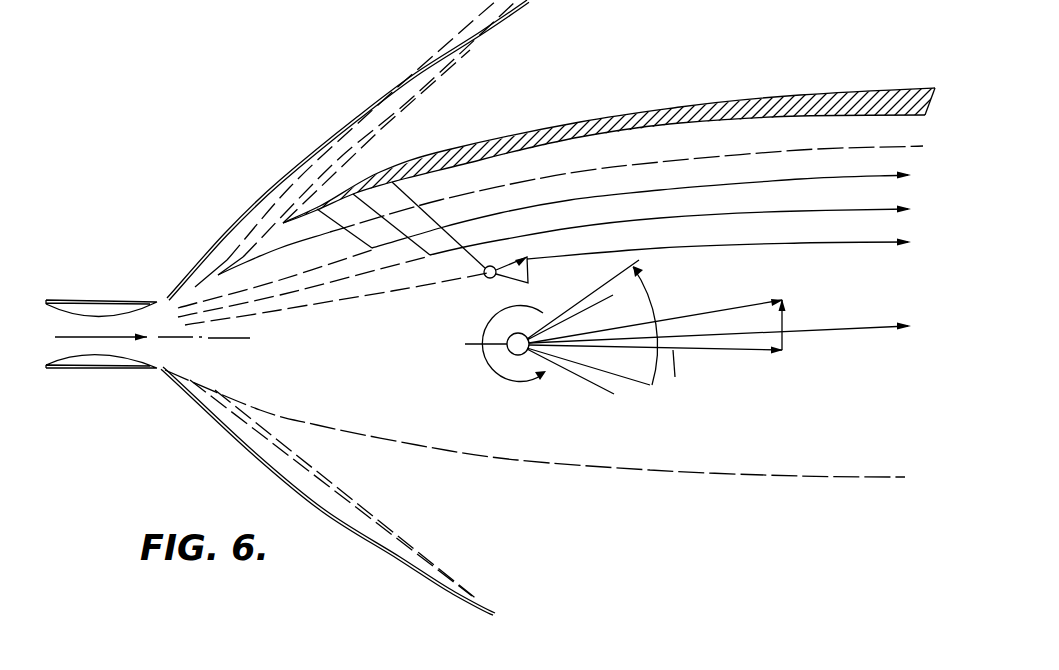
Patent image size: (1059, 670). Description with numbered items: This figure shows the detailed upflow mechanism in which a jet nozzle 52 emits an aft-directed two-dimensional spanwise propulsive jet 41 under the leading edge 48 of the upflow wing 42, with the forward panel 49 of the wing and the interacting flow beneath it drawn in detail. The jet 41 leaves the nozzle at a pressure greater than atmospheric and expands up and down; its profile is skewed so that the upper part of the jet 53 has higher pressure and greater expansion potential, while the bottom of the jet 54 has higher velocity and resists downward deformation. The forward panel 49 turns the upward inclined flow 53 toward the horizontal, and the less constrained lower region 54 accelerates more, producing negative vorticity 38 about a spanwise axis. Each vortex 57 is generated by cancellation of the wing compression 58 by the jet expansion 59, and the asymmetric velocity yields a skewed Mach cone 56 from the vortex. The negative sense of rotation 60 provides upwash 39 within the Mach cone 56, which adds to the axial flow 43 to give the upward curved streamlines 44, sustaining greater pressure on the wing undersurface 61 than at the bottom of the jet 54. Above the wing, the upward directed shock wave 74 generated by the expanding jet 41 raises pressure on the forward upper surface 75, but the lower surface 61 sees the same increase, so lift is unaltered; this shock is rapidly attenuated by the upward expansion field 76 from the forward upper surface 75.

The dynamic vorticity 38 is at (642, 272).
The upwash 39 is at (787, 338).
The propulsive jet 41 is at (58, 334).
The upflow wing 42 is at (757, 99).
The axial flow 43 is at (612, 375).
The upward inclined flow field 44 is at (748, 300).
The leading edge 48 is at (288, 217).
The forward panel 49 is at (580, 122).
The jet nozzle 52 is at (120, 300).
The upper part of the jet 53 is at (267, 280).
The bottom of the jet 54 is at (307, 422).
The skewed Mach cone 56 is at (569, 311).
The vortex 57 is at (508, 351).
The wing compression 58 is at (460, 247).
The jet expansion 59 is at (392, 292).
The negative sense of rotation 60 is at (507, 380).
The wing undersurface 61 is at (776, 118).
The upward directed shock wave 74 is at (283, 178).
The forward upper surface 75 is at (447, 150).
The upward expansion field 76 is at (473, 57).